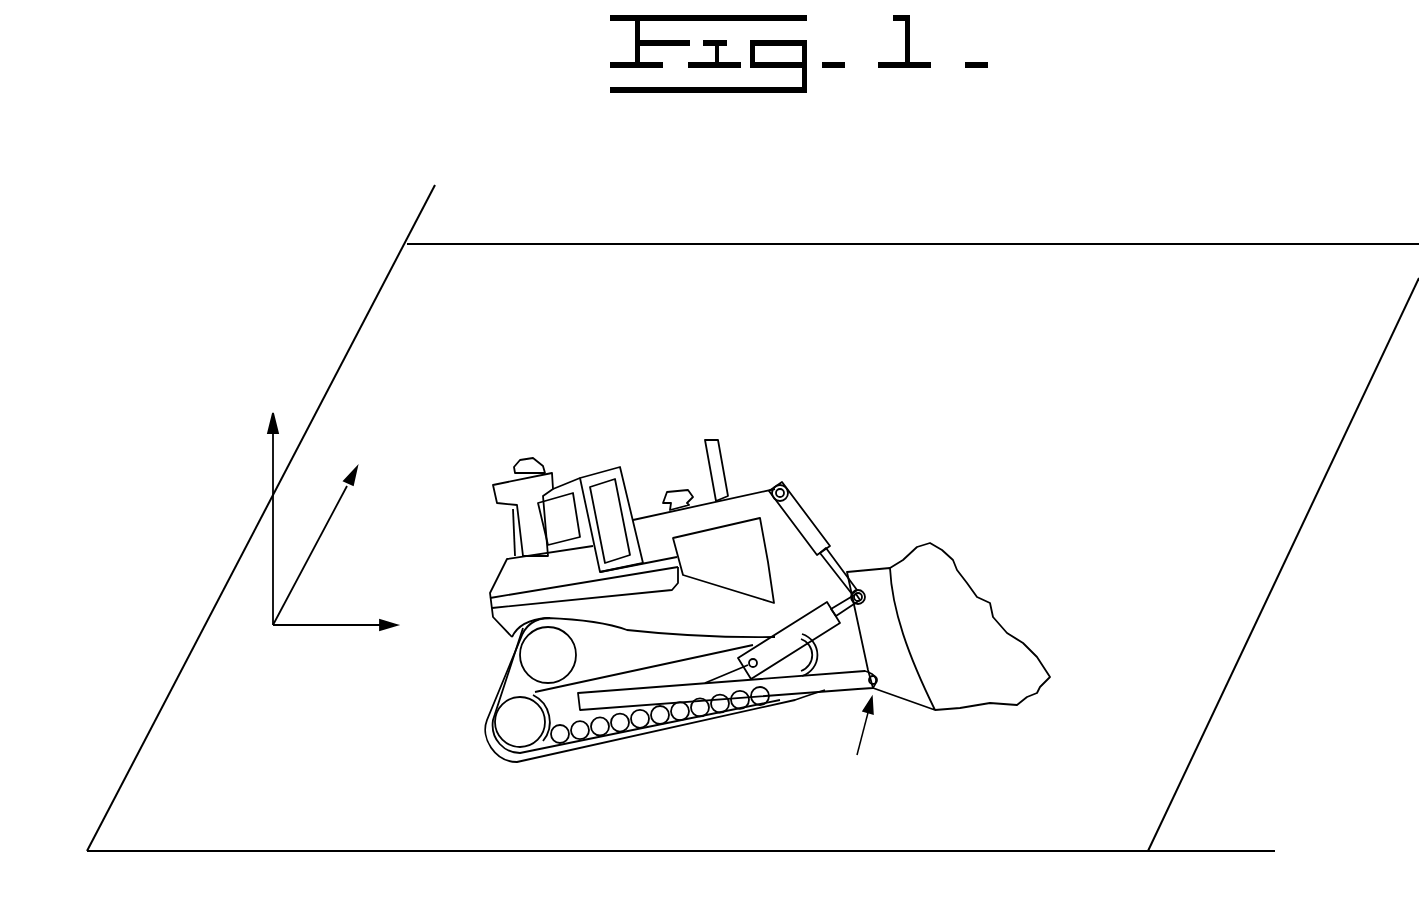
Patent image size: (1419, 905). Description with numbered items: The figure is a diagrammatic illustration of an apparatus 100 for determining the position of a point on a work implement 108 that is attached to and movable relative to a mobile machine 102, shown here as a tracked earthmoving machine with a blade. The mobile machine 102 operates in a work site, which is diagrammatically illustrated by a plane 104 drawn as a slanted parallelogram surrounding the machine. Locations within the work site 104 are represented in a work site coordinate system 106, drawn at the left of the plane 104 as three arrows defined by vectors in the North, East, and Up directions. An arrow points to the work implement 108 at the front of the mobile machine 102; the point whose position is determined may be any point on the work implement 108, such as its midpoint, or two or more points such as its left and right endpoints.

The apparatus 100 is at (1058, 392).
The mobile machine 102 is at (487, 746).
The plane 104 is at (1223, 693).
The work site coordinate system 106 is at (272, 628).
The work implement 108 is at (854, 742).